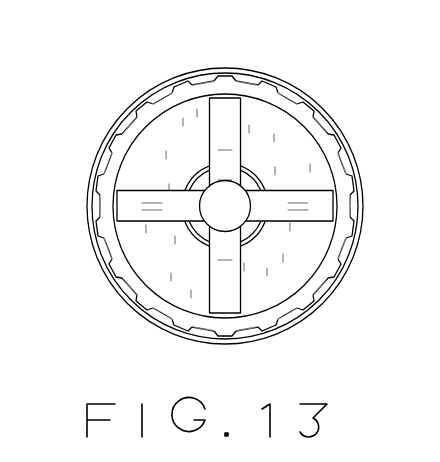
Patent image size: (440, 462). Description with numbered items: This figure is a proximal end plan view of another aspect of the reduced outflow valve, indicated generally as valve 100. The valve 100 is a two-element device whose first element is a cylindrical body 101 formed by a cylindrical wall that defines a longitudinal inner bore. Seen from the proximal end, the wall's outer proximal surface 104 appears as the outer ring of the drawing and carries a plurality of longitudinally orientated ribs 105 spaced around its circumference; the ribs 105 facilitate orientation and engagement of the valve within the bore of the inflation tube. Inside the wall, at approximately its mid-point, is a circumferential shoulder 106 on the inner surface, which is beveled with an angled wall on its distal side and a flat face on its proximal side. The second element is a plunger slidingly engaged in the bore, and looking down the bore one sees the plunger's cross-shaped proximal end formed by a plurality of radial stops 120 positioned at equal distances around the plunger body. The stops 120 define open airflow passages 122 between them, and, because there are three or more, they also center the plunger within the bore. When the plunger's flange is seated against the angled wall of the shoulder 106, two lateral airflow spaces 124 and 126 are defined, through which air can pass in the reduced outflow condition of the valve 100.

The valve 100 is at (232, 175).
The cylindrical body 101 is at (362, 222).
The outer proximal surface 104 is at (243, 80).
The ribs 105 is at (133, 297).
The circumferential shoulder 106 is at (170, 126).
The radial stops 120 is at (222, 110).
The open airflow passages 122 is at (259, 156).
The lateral airflow space 124 is at (153, 185).
The lateral airflow space 126 is at (297, 185).